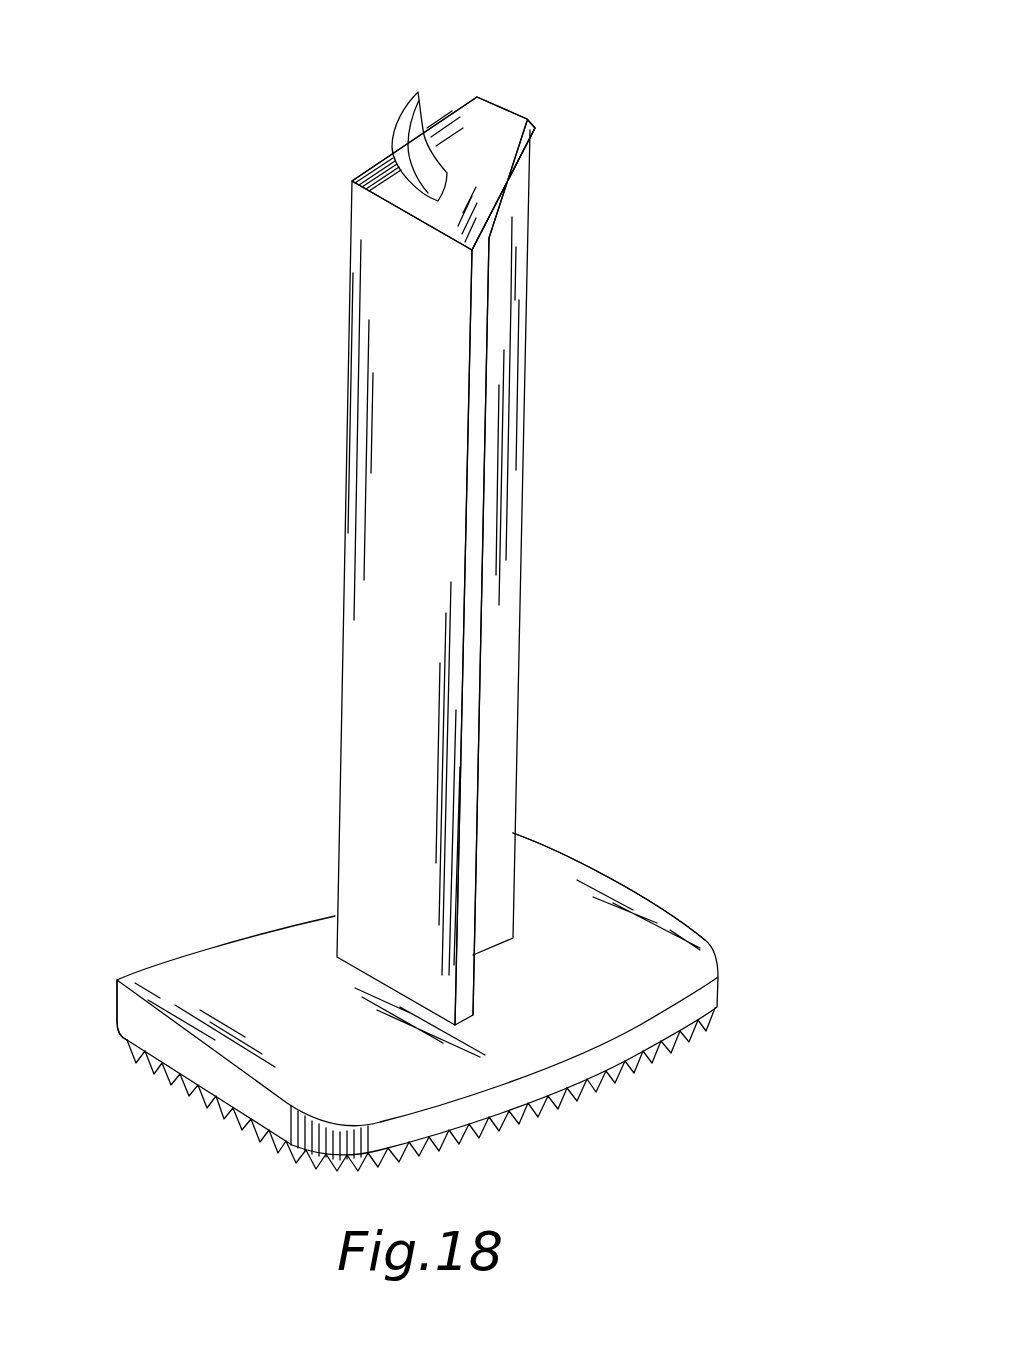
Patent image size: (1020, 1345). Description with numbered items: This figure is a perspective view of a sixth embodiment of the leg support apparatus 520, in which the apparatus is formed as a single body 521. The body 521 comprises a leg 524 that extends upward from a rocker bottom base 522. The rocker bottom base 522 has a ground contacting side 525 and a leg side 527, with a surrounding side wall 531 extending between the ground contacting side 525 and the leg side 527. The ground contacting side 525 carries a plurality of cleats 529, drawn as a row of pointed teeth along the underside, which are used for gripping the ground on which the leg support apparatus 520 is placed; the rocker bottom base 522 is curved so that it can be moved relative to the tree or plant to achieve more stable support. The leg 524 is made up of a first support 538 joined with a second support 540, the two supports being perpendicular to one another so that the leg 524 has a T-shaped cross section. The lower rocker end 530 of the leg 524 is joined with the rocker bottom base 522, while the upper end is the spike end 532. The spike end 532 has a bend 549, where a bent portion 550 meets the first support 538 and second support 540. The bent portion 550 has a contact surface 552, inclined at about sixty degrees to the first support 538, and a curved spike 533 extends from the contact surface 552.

The leg support apparatus 520 is at (503, 337).
The body 521 is at (495, 537).
The rocker bottom base 522 is at (645, 952).
The leg 524 is at (398, 410).
The ground contacting side 525 is at (563, 1098).
The leg side 527 is at (533, 857).
The cleats 529 is at (628, 1073).
The rocker end 530 is at (548, 892).
The surrounding side wall 531 is at (133, 1017).
The spike end 532 is at (517, 152).
The spike 533 is at (402, 145).
The first support 538 is at (380, 662).
The second support 540 is at (500, 655).
The bend 549 is at (422, 225).
The bent portion 550 is at (488, 117).
The contact surface 552 is at (467, 128).